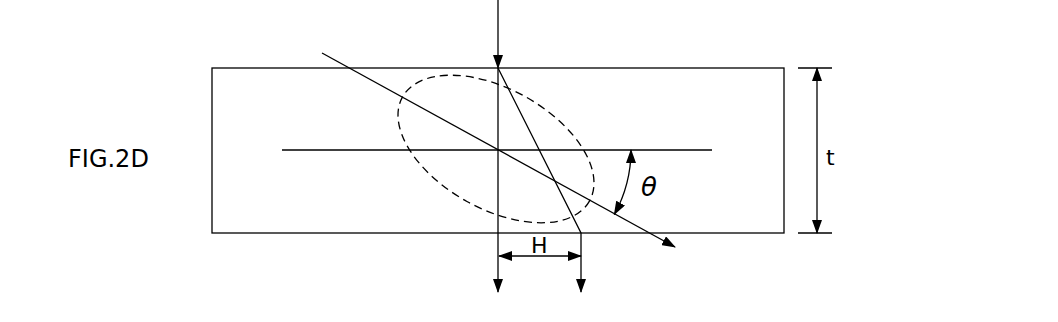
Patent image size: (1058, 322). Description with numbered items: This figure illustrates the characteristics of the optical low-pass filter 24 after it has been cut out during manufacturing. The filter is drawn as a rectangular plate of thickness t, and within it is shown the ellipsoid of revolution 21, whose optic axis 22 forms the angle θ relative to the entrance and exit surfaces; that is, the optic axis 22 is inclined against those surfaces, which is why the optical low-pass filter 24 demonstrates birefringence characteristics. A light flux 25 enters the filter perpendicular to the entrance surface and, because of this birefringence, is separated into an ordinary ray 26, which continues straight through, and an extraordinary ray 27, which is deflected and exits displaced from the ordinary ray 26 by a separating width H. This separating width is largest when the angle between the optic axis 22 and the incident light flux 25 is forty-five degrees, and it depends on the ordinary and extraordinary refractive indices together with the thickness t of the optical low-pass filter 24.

The ellipsoid of revolution 21 is at (422, 168).
The optic axis 22 is at (624, 221).
The optical low-pass filter 24 is at (710, 68).
The light flux 25 is at (498, 18).
The ordinary ray 26 is at (498, 270).
The extraordinary ray 27 is at (583, 268).